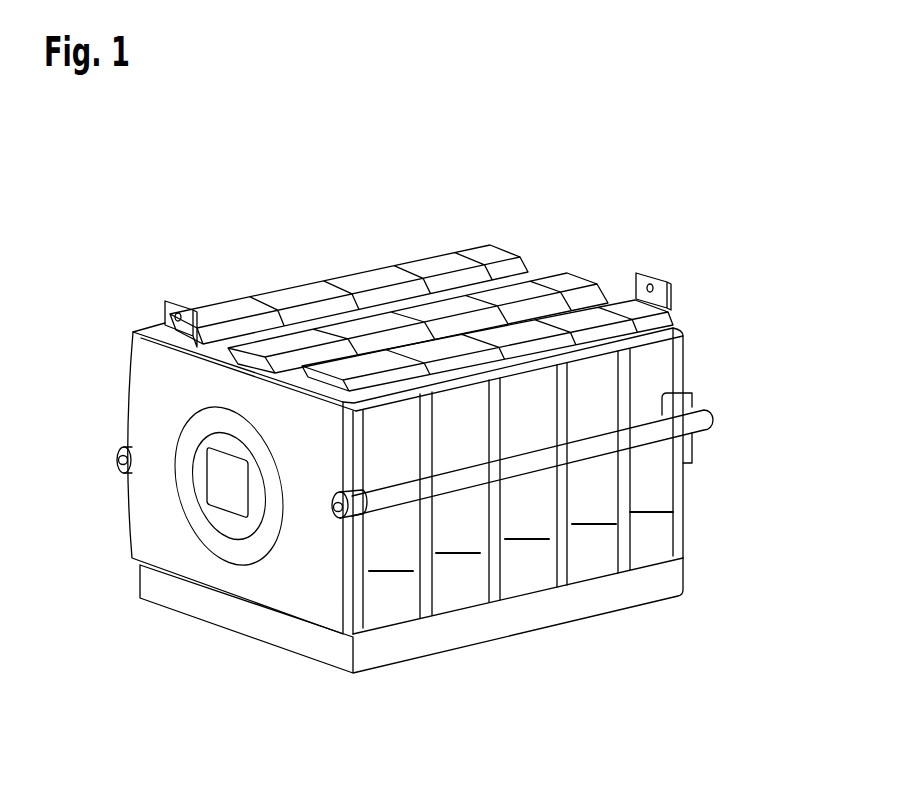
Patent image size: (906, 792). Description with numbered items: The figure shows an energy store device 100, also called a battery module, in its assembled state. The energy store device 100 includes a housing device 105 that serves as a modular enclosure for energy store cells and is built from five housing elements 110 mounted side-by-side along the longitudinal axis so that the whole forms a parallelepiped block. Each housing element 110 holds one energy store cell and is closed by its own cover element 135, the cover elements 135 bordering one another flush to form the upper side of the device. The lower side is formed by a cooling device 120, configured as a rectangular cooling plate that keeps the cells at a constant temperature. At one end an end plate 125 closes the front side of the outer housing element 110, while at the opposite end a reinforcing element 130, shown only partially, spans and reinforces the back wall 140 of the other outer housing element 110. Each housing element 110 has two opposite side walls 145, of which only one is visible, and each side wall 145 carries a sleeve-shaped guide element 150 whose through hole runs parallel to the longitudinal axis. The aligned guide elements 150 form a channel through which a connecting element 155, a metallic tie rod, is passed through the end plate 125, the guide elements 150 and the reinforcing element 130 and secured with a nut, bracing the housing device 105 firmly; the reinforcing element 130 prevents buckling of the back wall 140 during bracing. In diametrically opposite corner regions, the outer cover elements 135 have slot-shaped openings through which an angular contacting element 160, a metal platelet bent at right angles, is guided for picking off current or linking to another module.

The energy store device 100 is at (218, 162).
The housing device 105 is at (592, 162).
The housing elements 110 is at (393, 612).
The cooling device 120 is at (240, 625).
The end plate 125 is at (141, 393).
The reinforcing element 130 is at (690, 456).
The cover element 135 is at (150, 323).
The back wall 140 is at (685, 343).
The side walls 145 is at (521, 524).
The guide element 150 is at (663, 412).
The connecting element 155 is at (118, 467).
The angular contacting element 160 is at (168, 297).